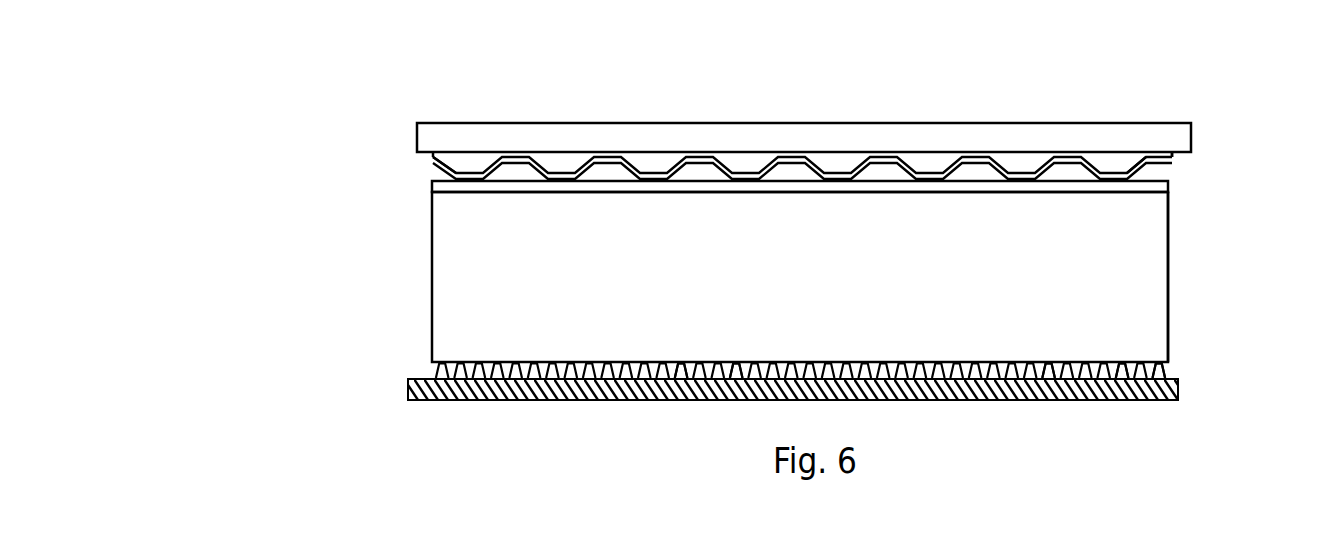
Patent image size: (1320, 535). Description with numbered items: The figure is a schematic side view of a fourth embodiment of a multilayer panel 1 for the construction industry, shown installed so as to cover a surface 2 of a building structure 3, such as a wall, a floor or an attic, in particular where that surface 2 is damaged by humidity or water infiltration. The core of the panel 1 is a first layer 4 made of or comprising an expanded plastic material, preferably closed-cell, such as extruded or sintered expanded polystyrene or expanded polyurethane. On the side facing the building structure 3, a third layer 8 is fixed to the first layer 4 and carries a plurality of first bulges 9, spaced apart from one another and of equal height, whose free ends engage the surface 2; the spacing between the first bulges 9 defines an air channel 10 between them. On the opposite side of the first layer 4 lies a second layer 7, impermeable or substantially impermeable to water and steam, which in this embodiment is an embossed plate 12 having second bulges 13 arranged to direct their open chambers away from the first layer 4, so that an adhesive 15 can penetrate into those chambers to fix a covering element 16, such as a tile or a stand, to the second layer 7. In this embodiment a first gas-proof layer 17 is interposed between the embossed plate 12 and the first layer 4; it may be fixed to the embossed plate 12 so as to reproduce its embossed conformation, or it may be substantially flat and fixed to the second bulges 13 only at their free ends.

The multilayer panel 1 is at (1203, 290).
The surface 2 is at (1172, 377).
The building structure 3 is at (488, 393).
The first layer 4 is at (448, 310).
The second layer 7 is at (1175, 160).
The third layer 8 is at (433, 370).
The first bulges 9 is at (737, 370).
The air channel 10 is at (1130, 375).
The embossed plate 12 is at (445, 173).
The second bulges 13 is at (1142, 170).
The adhesive 15 is at (647, 165).
The covering element 16 is at (486, 137).
The first gas-proof layer 17 is at (432, 188).